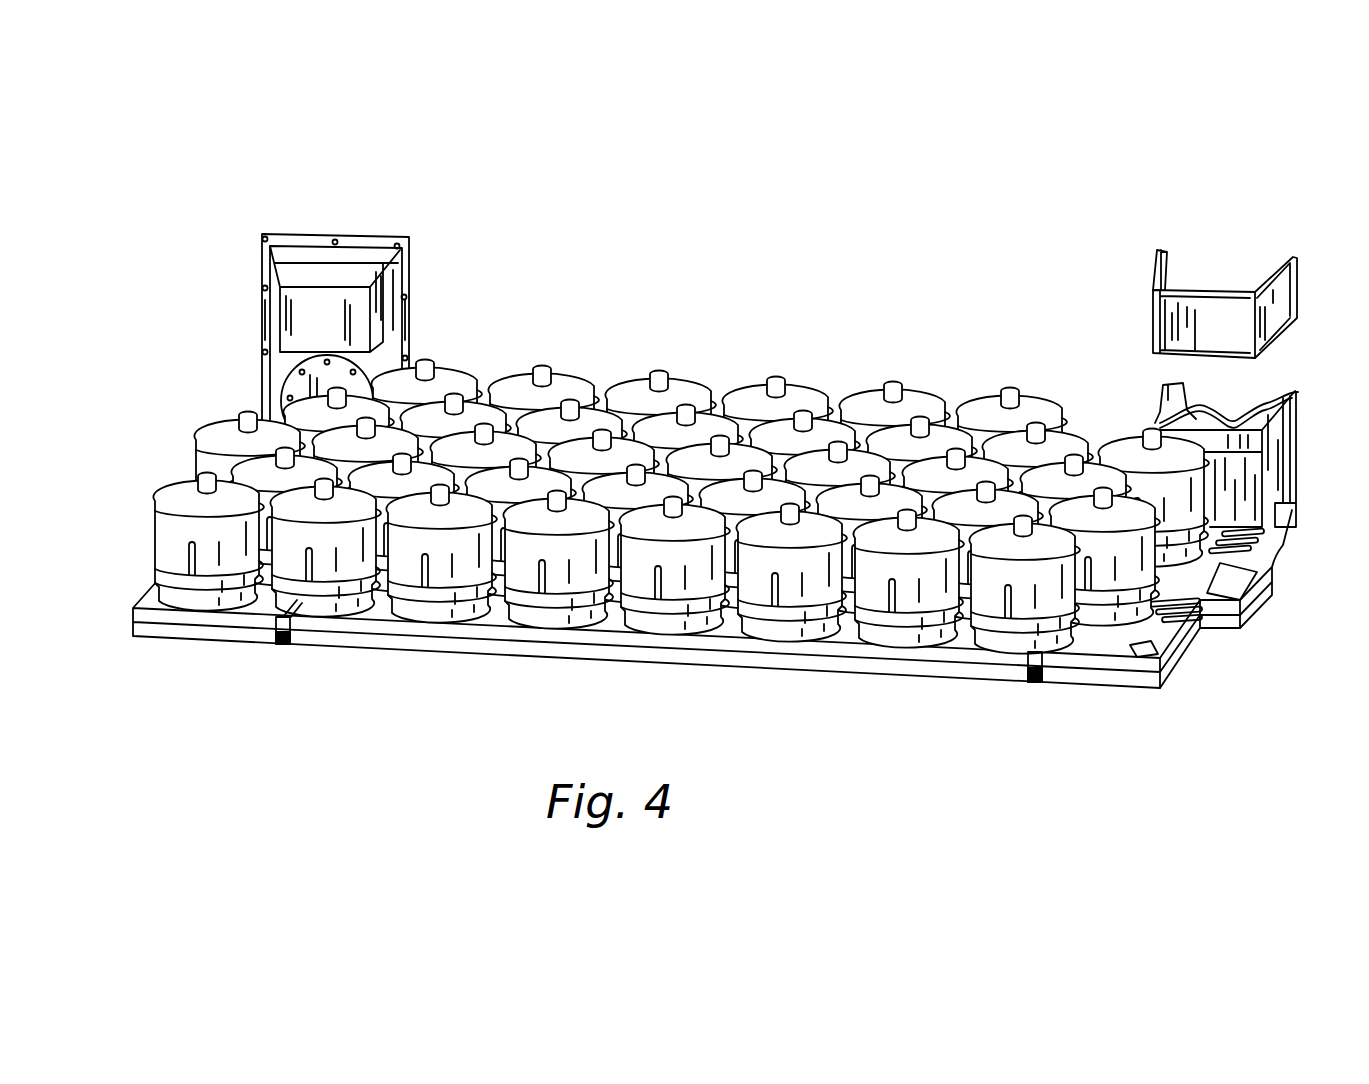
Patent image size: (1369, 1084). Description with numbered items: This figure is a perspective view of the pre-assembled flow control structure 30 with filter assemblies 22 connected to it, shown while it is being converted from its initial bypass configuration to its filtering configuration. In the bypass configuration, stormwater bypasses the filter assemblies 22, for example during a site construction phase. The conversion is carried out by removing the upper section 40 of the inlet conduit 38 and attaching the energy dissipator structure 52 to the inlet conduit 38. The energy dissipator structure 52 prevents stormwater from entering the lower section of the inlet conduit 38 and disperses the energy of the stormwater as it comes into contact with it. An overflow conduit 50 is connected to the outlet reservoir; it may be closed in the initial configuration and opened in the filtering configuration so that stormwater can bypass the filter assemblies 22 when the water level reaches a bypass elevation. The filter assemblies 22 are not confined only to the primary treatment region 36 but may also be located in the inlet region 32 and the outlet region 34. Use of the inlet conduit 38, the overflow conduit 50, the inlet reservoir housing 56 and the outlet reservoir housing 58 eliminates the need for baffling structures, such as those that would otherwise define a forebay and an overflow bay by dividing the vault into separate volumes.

The filter assembly 22 is at (677, 383).
The pre-assembled flow control structure 30 is at (820, 268).
The inlet region 32 is at (1136, 418).
The outlet region 34 is at (428, 345).
The primary treatment region 36 is at (918, 362).
The inlet conduit 38 is at (1277, 465).
The upper section 40 is at (1278, 310).
The overflow conduit 50 is at (400, 288).
The energy dissipator structure 52 is at (1263, 410).
The inlet reservoir housing 56 is at (1200, 670).
The outlet reservoir housing 58 is at (147, 597).